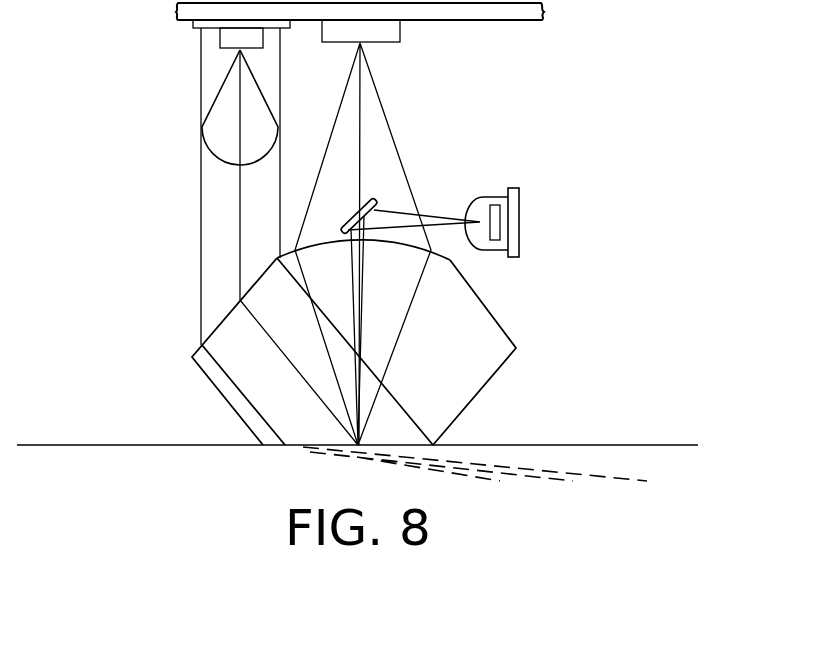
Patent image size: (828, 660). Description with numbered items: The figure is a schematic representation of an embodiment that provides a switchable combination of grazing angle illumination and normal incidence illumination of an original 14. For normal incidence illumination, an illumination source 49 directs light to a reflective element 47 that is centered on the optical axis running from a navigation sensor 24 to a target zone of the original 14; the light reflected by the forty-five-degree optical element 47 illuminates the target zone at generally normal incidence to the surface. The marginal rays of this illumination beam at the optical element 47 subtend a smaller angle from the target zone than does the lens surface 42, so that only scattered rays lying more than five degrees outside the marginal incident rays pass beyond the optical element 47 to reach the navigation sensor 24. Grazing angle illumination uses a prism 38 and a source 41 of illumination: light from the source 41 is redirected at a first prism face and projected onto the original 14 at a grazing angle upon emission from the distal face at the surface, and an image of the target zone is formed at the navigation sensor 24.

The original 14 is at (114, 444).
The navigation sensor 24 is at (401, 32).
The prism 38 is at (495, 338).
The source of illumination 41 is at (207, 83).
The lens surface 42 is at (309, 243).
The reflective element 47 is at (378, 198).
The illumination source 49 is at (493, 196).